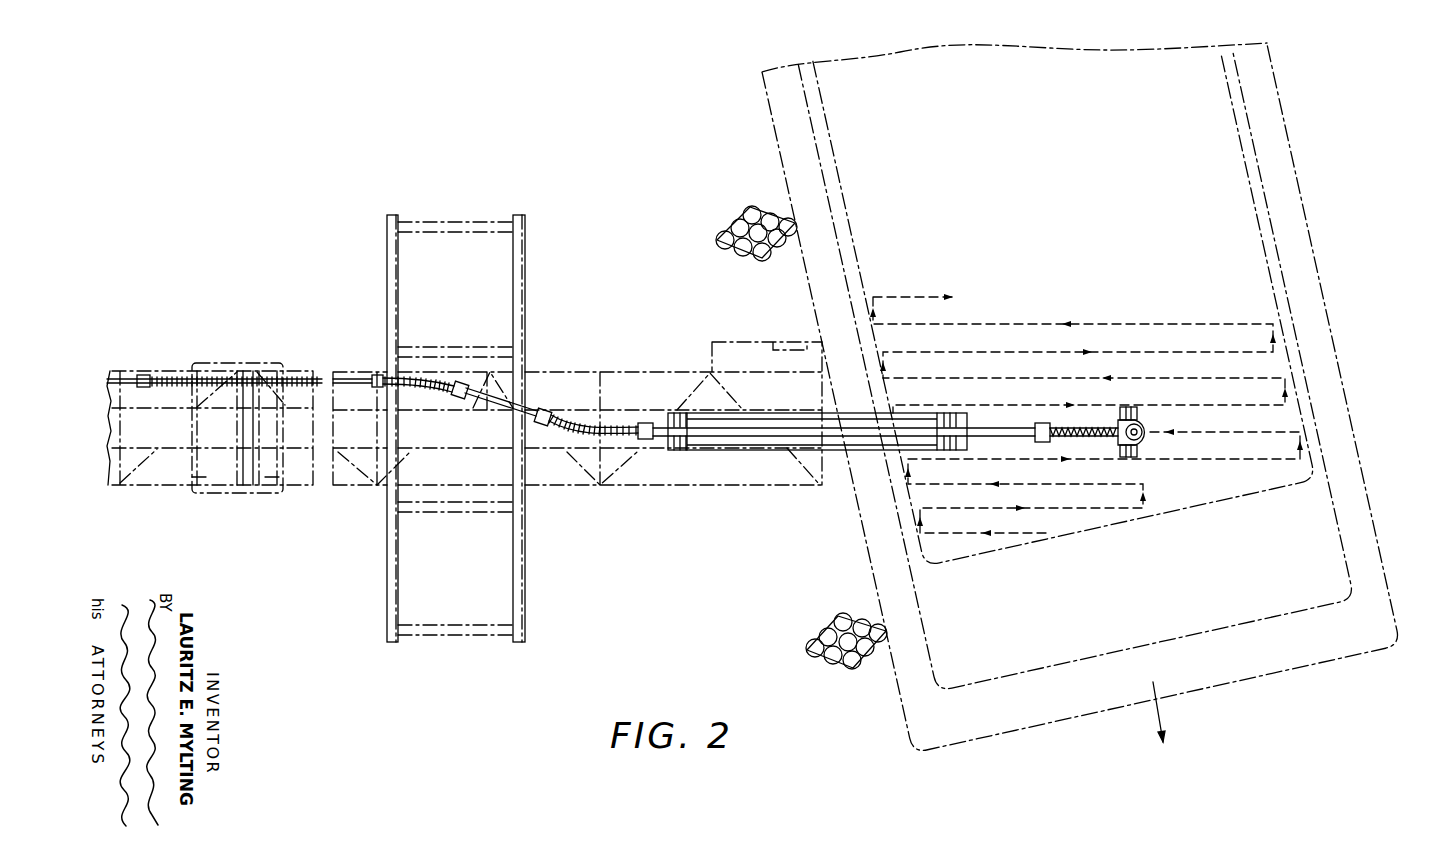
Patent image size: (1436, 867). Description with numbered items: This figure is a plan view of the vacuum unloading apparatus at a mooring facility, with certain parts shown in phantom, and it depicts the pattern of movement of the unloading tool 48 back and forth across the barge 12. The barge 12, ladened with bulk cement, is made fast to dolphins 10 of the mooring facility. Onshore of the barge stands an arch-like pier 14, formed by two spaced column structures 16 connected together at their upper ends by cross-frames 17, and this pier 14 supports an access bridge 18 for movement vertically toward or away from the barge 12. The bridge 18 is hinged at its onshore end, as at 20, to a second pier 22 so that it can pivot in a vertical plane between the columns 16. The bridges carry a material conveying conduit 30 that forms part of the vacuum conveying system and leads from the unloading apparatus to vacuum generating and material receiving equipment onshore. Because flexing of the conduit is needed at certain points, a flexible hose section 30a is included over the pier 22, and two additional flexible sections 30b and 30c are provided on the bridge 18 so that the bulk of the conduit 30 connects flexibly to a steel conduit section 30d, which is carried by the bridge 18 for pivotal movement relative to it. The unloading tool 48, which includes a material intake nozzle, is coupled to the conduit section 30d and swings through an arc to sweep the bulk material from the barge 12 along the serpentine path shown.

The dolphins 10 is at (752, 258).
The barge 12 is at (1333, 360).
The arch-like pier 14 is at (437, 413).
The column structures 16 is at (460, 224).
The cross-frames 17 is at (376, 487).
The access bridge 18 is at (658, 484).
The hinge 20 is at (241, 492).
The second pier 22 is at (268, 322).
The material conveying conduit 30 is at (497, 405).
The flexible hose section 30a is at (300, 378).
The flexible section 30b is at (430, 388).
The flexible section 30c is at (597, 427).
The steel conduit section 30d is at (750, 438).
The unloading tool 48 is at (1122, 418).